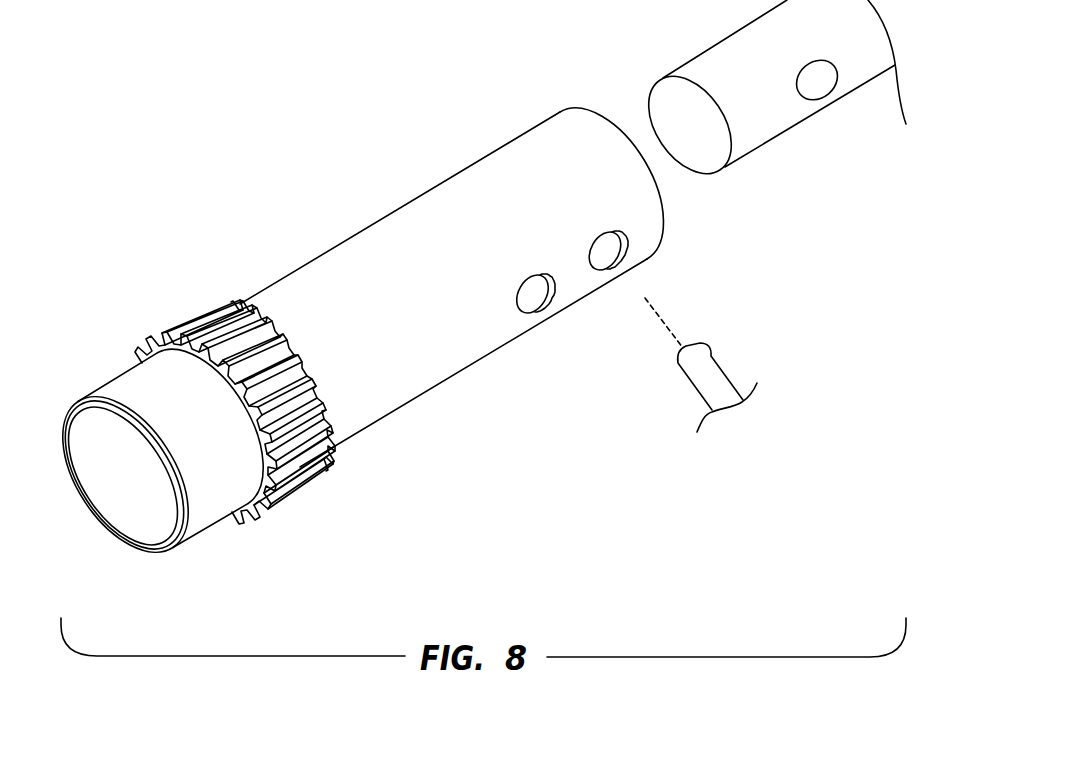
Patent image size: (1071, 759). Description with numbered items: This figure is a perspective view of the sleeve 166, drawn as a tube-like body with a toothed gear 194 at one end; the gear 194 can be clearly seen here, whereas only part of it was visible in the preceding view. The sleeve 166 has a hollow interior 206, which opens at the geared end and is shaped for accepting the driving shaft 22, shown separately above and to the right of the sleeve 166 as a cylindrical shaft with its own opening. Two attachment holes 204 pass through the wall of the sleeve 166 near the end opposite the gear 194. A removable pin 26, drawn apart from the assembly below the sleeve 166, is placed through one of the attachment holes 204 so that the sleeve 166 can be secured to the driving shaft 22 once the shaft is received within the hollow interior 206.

The sleeve 166 is at (320, 212).
The gear 194 is at (205, 332).
The attachment holes 204 is at (529, 293).
The hollow interior 206 is at (142, 485).
The driving shaft 22 is at (758, 123).
The removable pin 26 is at (705, 368).